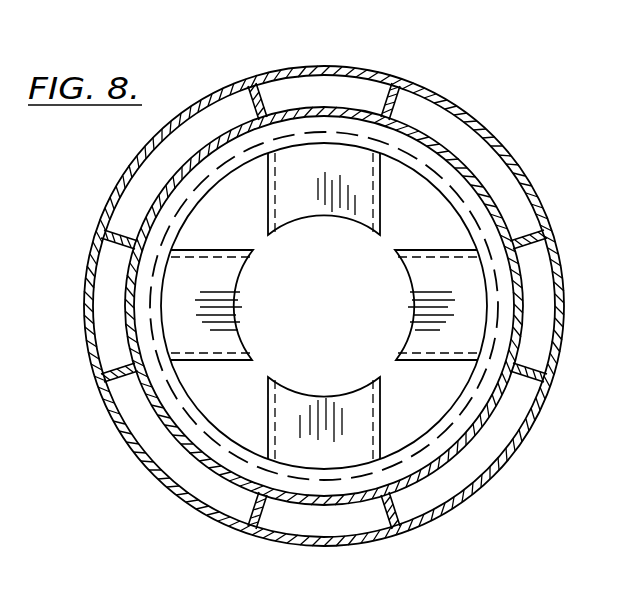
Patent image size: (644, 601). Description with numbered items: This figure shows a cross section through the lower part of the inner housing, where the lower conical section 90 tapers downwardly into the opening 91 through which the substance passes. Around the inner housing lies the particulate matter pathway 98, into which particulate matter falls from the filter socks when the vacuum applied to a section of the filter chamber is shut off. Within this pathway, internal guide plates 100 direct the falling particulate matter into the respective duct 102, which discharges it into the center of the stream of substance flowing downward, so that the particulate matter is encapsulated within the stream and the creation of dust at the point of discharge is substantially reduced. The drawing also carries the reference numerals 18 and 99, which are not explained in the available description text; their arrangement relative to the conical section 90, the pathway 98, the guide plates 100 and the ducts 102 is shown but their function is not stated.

The housing outer wall 18 is at (512, 452).
The lower conical section 90 is at (190, 453).
The opening 91 is at (428, 216).
The particulate matter pathway 98 is at (394, 106).
The flow passages 99 is at (541, 305).
The internal guide plates 100 is at (380, 103).
The duct 102 is at (236, 191).